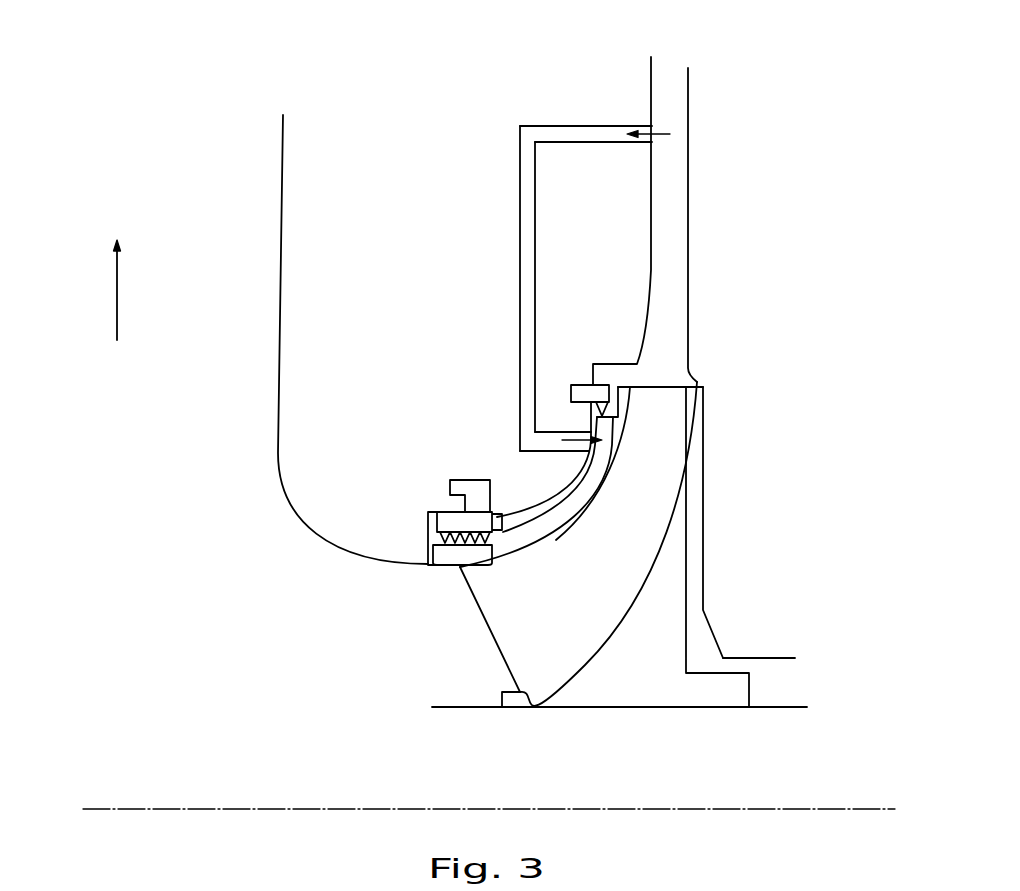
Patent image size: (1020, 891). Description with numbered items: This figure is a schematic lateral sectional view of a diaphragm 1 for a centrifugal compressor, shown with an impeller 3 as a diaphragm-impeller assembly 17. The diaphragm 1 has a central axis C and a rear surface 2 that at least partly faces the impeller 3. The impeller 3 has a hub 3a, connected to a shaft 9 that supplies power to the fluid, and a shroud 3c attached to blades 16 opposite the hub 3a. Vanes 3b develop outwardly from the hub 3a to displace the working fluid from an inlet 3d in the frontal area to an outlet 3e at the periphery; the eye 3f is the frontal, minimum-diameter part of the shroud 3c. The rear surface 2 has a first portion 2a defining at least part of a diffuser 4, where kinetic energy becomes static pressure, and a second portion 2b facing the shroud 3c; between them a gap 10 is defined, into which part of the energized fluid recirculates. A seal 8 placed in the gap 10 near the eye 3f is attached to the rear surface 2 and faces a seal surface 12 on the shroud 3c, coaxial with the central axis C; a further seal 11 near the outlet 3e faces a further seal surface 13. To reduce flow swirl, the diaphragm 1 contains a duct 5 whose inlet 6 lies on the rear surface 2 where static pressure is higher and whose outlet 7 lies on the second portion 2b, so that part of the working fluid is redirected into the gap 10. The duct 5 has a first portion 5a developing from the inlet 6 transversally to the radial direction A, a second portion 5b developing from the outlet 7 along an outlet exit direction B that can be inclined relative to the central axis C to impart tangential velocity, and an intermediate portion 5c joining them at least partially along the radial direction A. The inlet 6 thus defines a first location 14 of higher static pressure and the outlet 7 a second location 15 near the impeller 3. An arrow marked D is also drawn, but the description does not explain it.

The diaphragm 1 is at (281, 196).
The diaphragm-impeller assembly 17 is at (141, 115).
The radial direction A is at (117, 288).
The rear surface 2 is at (653, 382).
The first portion 2a is at (647, 325).
The second portion 2b is at (567, 495).
The impeller 3 is at (560, 523).
The hub 3a is at (731, 672).
The vanes 3b is at (494, 640).
The shroud 3c is at (447, 567).
The inlet 3d is at (453, 567).
The outlet 3e is at (680, 382).
The eye 3f is at (440, 567).
The diffuser 4 is at (688, 302).
The duct 5 is at (572, 248).
The first portion 5a is at (585, 125).
The second portion 5b is at (520, 452).
The intermediate portion 5c is at (520, 250).
The inlet 6 is at (654, 142).
The outlet 7 is at (610, 460).
The seal 8 is at (430, 523).
The shaft 9 is at (793, 707).
The gap 10 is at (530, 527).
The further seal 11 is at (571, 396).
The seal surface 12 is at (494, 548).
The further seal surface 13 is at (632, 400).
The first location 14 is at (652, 128).
The second location 15 is at (617, 420).
The blades 16 is at (510, 672).
The outlet exit direction B is at (583, 457).
The central axis C is at (850, 808).
The flow direction D is at (655, 131).